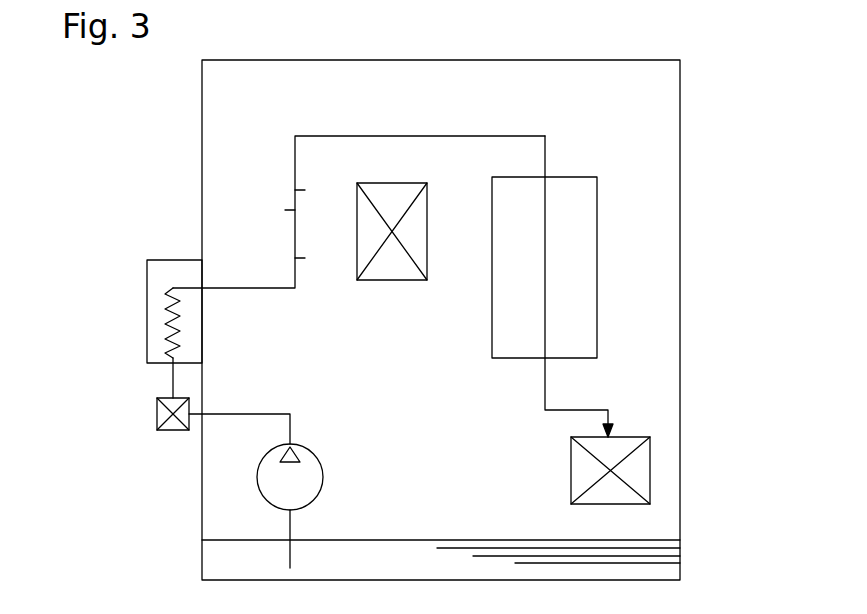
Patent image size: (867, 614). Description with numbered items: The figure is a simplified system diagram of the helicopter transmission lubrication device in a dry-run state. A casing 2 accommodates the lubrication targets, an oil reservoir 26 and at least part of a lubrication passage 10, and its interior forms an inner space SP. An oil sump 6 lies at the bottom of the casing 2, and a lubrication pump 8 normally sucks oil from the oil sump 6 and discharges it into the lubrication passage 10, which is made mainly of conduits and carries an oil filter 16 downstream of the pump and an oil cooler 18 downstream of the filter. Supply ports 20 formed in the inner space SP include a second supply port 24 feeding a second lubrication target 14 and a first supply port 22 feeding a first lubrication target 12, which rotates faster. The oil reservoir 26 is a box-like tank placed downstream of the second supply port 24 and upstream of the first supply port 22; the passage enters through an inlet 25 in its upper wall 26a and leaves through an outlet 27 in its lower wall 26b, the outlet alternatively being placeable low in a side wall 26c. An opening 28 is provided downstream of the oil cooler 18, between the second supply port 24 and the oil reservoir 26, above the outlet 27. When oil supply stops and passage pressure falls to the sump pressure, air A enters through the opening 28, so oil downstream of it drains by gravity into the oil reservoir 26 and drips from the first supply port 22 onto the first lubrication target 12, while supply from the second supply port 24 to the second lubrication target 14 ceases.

The casing 2 is at (681, 90).
The oil sump 6 is at (218, 560).
The lubrication pump 8 is at (320, 482).
The lubrication passage 10 is at (519, 136).
The first lubrication target 12 is at (647, 475).
The second lubrication target 14 is at (388, 275).
The oil filter 16 is at (167, 432).
The oil cooler 18 is at (158, 328).
The supply ports 20 is at (439, 291).
The first supply port 22 is at (612, 420).
The second supply port 24 is at (296, 189).
The inlet 25 is at (543, 180).
The oil reservoir 26 is at (591, 267).
The upper wall 26a is at (587, 177).
The lower wall 26b is at (580, 358).
The side wall 26c is at (598, 238).
The outlet 27 is at (545, 357).
The opening 28 is at (424, 134).
The air A is at (425, 136).
The inner space SP is at (447, 457).